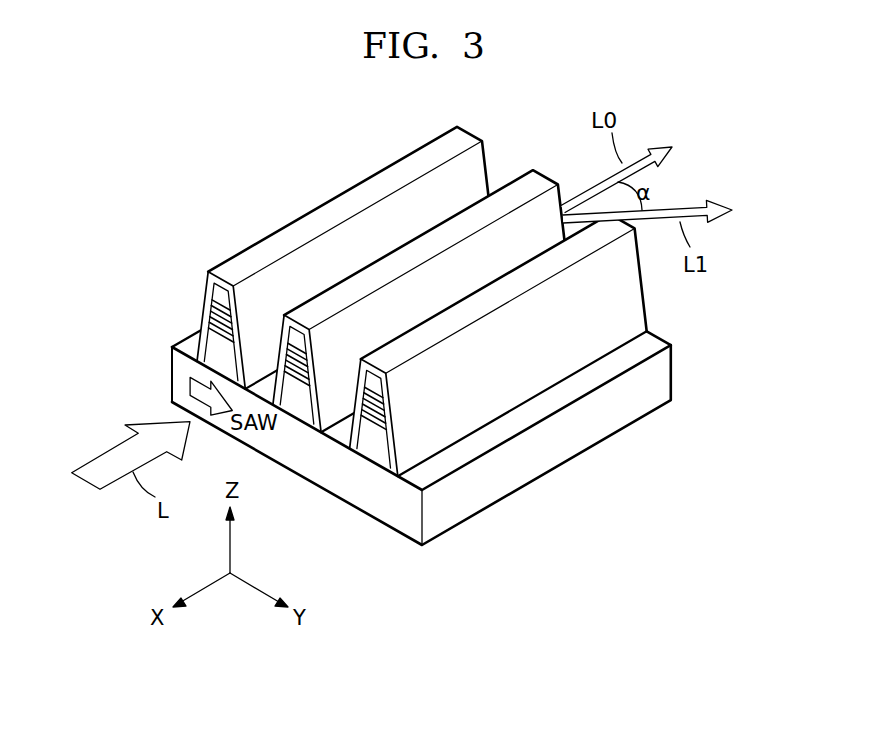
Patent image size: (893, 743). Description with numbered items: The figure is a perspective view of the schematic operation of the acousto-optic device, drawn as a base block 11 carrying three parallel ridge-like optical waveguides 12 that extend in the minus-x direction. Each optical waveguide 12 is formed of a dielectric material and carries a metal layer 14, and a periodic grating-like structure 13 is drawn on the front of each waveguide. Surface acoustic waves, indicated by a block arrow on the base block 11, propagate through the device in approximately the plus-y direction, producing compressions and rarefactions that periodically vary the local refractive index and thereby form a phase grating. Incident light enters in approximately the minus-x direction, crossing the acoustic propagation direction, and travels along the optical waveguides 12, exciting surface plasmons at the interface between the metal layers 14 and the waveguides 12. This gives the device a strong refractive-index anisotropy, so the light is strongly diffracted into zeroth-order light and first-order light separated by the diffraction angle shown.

The substrate 11 is at (548, 463).
The optical waveguide 12 is at (218, 354).
The grating 13 is at (208, 310).
The metal layer 14 is at (215, 278).